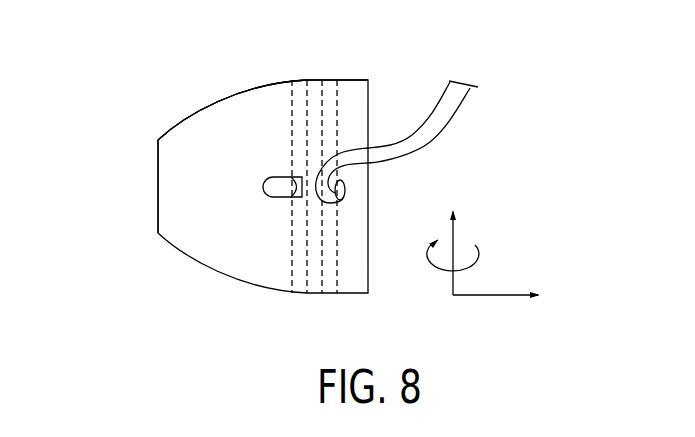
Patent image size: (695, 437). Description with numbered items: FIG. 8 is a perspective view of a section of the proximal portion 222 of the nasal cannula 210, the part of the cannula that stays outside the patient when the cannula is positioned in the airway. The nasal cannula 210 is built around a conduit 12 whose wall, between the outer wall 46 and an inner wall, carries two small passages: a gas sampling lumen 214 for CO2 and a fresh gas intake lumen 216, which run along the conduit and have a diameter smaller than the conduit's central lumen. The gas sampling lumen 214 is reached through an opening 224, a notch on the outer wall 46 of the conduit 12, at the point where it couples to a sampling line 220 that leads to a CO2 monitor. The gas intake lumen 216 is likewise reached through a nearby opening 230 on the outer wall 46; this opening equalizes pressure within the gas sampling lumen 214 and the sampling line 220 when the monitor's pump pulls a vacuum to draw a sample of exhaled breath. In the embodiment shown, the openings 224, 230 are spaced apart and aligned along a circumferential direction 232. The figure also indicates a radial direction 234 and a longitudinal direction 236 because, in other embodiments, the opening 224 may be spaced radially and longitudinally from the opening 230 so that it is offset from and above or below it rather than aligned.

The conduit 12 is at (368, 78).
The outer wall 46 is at (237, 112).
The nasal cannula 210 is at (162, 87).
The gas sampling lumen 214 is at (330, 277).
The gas intake lumen 216 is at (292, 275).
The sampling line 220 is at (430, 123).
The proximal portion 222 is at (132, 185).
The opening 224 is at (345, 192).
The opening 230 is at (268, 178).
The circumferential direction 232 is at (478, 258).
The radial direction 234 is at (492, 296).
The longitudinal direction 236 is at (456, 238).